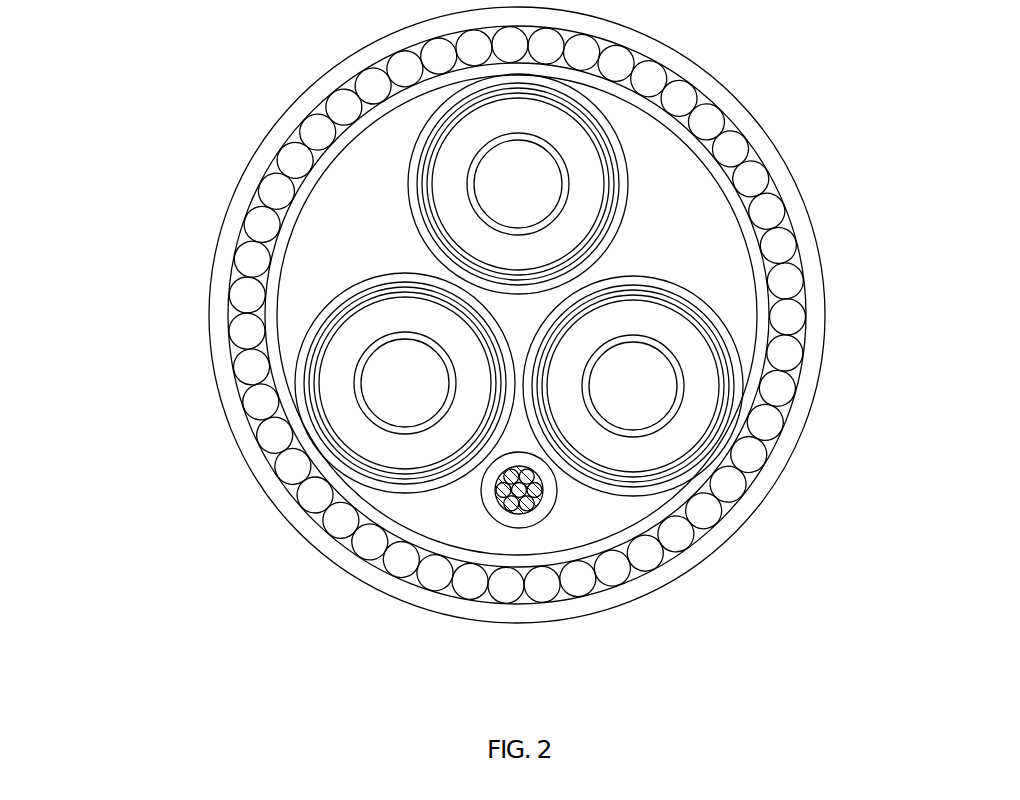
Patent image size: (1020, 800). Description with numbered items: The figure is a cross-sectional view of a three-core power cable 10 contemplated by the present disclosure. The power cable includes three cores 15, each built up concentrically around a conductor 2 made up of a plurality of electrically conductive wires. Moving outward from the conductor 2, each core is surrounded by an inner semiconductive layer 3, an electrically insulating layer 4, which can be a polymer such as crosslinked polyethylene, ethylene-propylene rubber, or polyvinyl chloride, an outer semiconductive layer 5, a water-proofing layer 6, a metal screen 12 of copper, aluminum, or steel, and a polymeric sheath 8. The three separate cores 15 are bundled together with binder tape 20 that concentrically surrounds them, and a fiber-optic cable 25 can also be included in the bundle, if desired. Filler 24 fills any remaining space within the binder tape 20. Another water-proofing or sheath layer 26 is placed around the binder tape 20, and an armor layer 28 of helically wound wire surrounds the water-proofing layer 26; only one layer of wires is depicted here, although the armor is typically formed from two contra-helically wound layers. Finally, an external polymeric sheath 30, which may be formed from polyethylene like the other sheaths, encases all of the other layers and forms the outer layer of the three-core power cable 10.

The three-core power cable 10 is at (190, 98).
The core 15 is at (559, 163).
The conductor 2 is at (528, 178).
The inner semiconductive layer 3 is at (562, 162).
The electrically insulating layer 4 is at (595, 207).
The outer semiconductive layer 5 is at (614, 233).
The water-proofing layer 6 is at (608, 244).
The metal screen 12 is at (700, 308).
The polymeric sheath 8 is at (745, 345).
The filler 24 is at (774, 404).
The binder tape 20 is at (790, 438).
The water-proofing or sheath layer 26 is at (707, 511).
The armor layer 28 is at (652, 485).
The external polymeric sheath 30 is at (280, 487).
The fiber-optic cable 25 is at (507, 527).